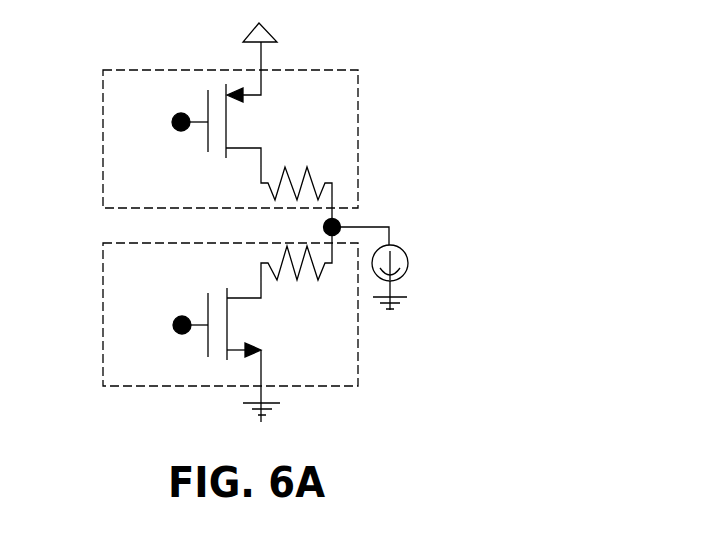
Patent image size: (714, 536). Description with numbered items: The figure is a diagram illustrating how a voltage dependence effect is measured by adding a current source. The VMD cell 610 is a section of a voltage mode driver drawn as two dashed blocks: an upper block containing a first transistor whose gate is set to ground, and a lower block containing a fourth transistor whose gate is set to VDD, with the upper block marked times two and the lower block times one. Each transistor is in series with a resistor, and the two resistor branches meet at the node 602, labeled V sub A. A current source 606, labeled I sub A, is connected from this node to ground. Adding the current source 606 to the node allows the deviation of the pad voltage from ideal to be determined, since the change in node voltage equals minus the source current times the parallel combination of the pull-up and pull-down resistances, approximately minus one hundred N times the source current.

The voltage node VA 602 is at (322, 227).
The current source 606 is at (445, 318).
The VMD cell 610 is at (173, 412).